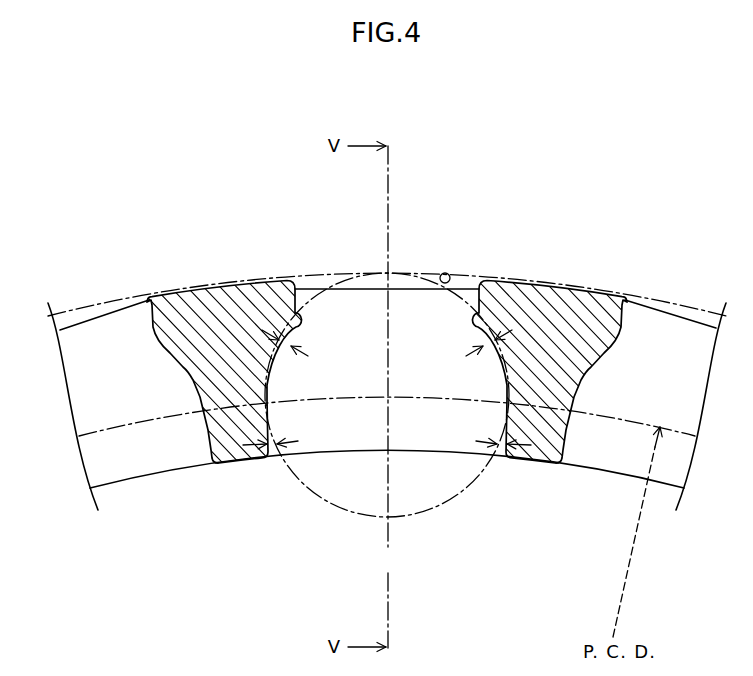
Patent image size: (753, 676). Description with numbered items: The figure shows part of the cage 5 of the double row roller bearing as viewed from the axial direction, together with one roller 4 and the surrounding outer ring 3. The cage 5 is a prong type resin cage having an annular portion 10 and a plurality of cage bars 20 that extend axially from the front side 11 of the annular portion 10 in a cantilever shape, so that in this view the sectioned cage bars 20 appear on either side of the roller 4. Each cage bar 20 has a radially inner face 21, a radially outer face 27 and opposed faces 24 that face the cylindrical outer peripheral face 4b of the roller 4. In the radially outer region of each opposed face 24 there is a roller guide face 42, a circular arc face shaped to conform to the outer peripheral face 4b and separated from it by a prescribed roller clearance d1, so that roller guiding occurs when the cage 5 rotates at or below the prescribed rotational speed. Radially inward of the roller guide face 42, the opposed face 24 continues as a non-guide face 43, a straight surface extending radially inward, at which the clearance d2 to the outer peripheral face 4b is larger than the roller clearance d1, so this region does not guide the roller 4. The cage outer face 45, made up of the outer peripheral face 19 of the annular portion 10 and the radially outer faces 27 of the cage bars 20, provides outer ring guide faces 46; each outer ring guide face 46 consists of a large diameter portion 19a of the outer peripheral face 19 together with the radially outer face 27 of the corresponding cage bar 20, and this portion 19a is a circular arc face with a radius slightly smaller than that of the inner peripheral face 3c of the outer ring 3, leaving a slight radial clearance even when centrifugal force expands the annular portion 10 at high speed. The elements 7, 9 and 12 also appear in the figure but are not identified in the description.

The outer ring 3 is at (87, 306).
The inner peripheral face 3c is at (446, 273).
The roller 4 is at (354, 515).
The outer peripheral face 4b is at (309, 285).
The cage 5 is at (586, 289).
The clearance 7 is at (451, 317).
The inner peripheral surface 9 is at (627, 476).
The annular portion 10 is at (693, 313).
The front side 11 is at (340, 442).
The ring body 12 is at (140, 478).
The outer peripheral face 19 is at (418, 286).
The portion of the outer peripheral face 19a is at (163, 298).
The cage bar 20 is at (226, 298).
The radially inner face 21 is at (222, 463).
The opposed face 24 is at (192, 380).
The radially outer face 27 is at (212, 285).
The roller guide face 42 is at (273, 300).
The non-guide face 43 is at (278, 439).
The cage outer face 45 is at (358, 279).
The outer ring guide face 46 is at (177, 292).
The roller clearance d1 is at (303, 352).
The clearance d2 is at (251, 448).